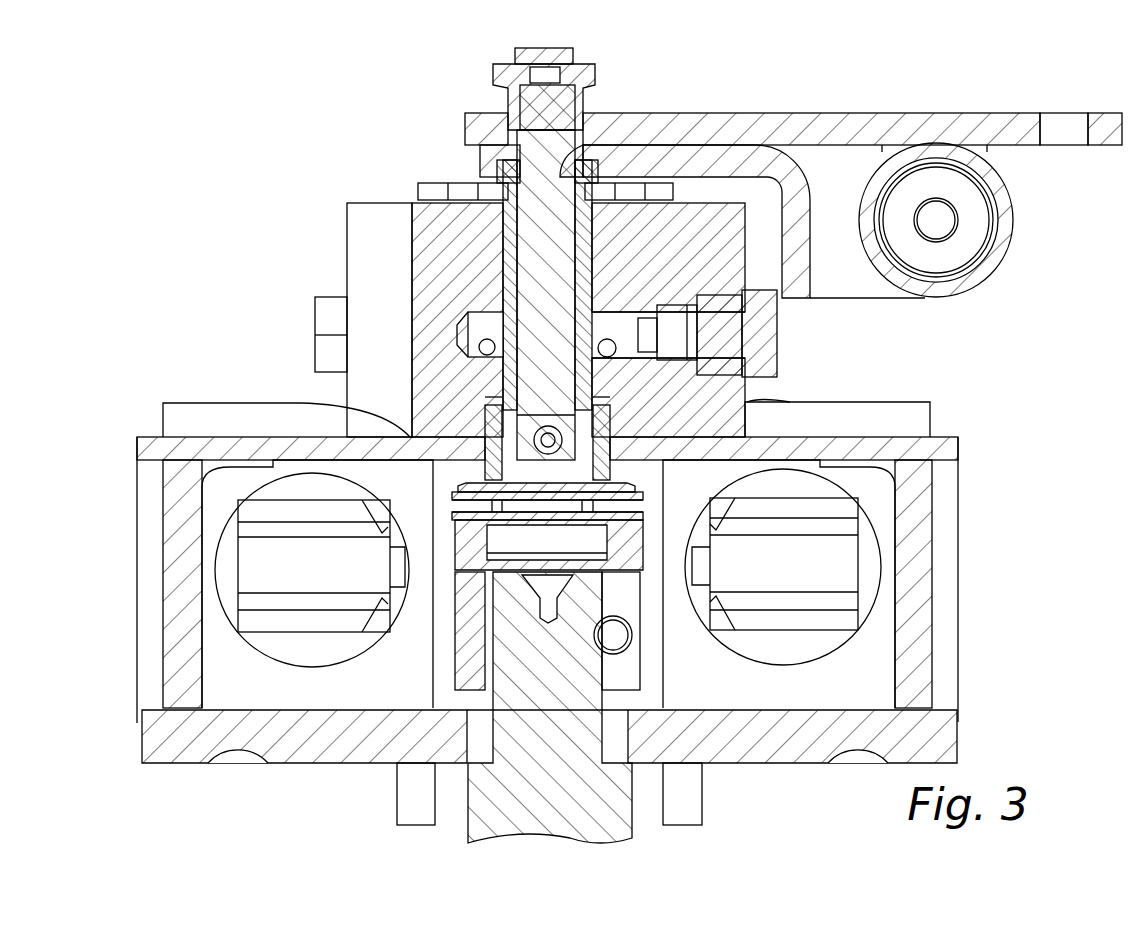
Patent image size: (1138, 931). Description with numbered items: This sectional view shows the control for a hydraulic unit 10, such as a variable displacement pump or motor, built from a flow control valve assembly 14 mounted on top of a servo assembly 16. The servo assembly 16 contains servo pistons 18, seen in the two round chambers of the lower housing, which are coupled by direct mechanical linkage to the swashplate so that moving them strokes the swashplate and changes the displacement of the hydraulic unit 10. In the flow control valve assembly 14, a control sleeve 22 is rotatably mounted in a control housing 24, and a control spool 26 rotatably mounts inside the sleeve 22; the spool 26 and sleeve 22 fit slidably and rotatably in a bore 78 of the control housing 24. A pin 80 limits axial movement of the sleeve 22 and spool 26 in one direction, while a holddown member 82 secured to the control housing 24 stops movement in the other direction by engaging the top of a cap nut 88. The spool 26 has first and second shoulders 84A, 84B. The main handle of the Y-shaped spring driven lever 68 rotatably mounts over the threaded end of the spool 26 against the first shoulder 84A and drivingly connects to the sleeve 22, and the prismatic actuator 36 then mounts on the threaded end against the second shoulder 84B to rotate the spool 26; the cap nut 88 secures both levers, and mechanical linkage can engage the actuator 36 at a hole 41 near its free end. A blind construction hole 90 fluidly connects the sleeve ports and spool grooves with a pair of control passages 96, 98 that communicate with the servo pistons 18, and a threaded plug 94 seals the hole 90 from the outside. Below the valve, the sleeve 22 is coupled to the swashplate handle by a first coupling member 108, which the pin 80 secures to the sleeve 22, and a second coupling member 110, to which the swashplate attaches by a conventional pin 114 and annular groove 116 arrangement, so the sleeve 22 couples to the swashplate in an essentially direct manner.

The hydraulic unit 10 is at (247, 115).
The flow control valve assembly 14 is at (347, 203).
The servo assembly 16 is at (163, 445).
The servo pistons 18 is at (237, 563).
The control sleeve 22 is at (470, 205).
The control housing 24 is at (423, 312).
The control spool 26 is at (548, 288).
The actuator 36 is at (850, 113).
The hole 41 is at (1060, 145).
The spring driven lever 68 is at (797, 172).
The bore 78 is at (505, 243).
The pin 80 is at (500, 410).
The holddown member 82 is at (530, 56).
The first shoulder 84A is at (500, 130).
The second shoulder 84B is at (578, 130).
The cap nut 88 is at (583, 78).
The blind construction hole 90 is at (487, 320).
The threaded plug 94 is at (777, 340).
The control passage 96 is at (457, 340).
The control passage 98 is at (615, 345).
The first coupling member 108 is at (458, 483).
The second coupling member 110 is at (455, 548).
The pin 114 is at (630, 648).
The annular groove 116 is at (500, 625).